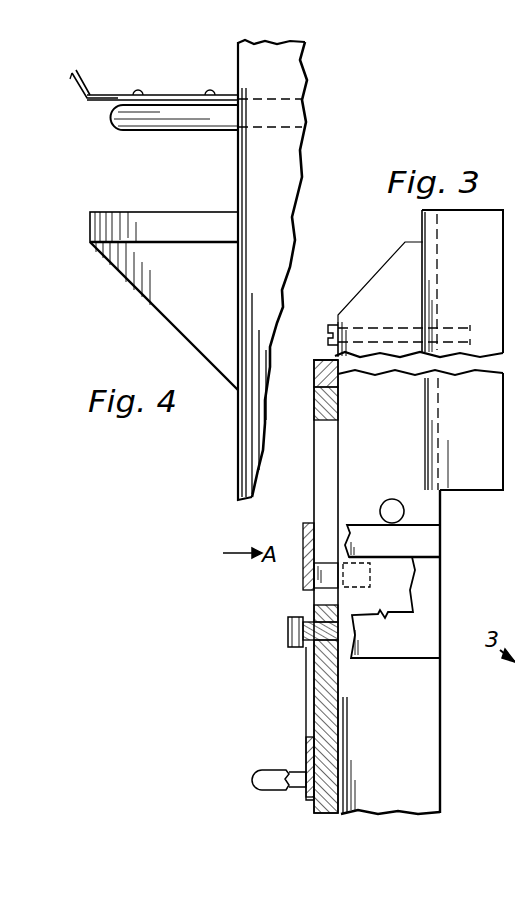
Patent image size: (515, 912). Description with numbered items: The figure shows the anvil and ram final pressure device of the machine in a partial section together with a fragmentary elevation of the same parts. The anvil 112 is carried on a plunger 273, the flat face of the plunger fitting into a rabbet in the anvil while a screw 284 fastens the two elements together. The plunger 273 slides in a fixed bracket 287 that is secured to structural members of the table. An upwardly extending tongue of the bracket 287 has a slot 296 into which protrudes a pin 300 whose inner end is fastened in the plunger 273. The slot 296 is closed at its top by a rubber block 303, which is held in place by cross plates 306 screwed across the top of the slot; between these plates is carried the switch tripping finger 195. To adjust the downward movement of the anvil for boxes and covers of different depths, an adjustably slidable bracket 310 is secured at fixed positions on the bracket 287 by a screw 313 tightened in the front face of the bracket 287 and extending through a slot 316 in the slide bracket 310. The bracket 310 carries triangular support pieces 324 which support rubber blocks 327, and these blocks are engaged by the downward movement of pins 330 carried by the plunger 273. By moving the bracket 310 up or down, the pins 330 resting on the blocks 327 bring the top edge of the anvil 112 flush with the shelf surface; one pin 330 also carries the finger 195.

In FIG. 3, the anvil 112 is at (483, 248).
In FIG. 4, the switch tripping finger 195 is at (118, 95).
In FIG. 4, the plunger 273 is at (288, 152).
In FIG. 3, the plunger 273 is at (430, 785).
In FIG. 3, the screw 284 is at (332, 320).
In FIG. 3, the fixed bracket 287 is at (333, 735).
In FIG. 3, the slot 296 is at (323, 498).
In FIG. 3, the pin 300 is at (335, 573).
In FIG. 3, the rubber block 303 is at (339, 412).
In FIG. 3, the cross plates 306 is at (322, 357).
In FIG. 3, the adjustably slidable bracket 310 is at (312, 567).
In FIG. 3, the screw 313 is at (288, 628).
In FIG. 3, the slot 316 is at (312, 656).
In FIG. 4, the triangular support pieces 324 is at (164, 316).
In FIG. 3, the triangular support pieces 324 is at (430, 603).
In FIG. 4, the rubber blocks 327 is at (133, 216).
In FIG. 3, the rubber blocks 327 is at (417, 540).
In FIG. 4, the pins 330 is at (203, 84).
In FIG. 3, the pins 330 is at (406, 485).